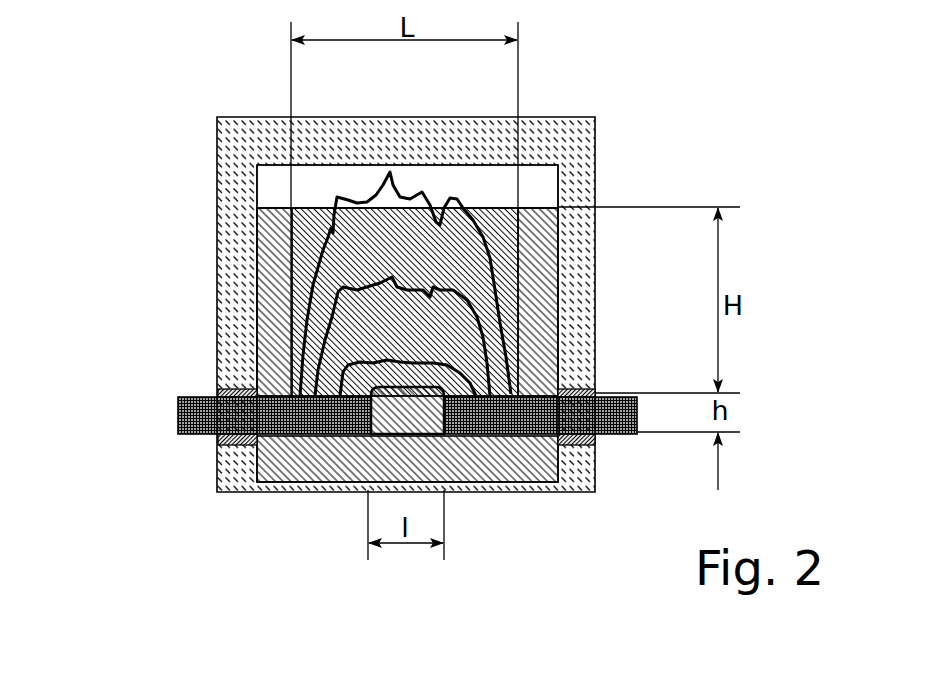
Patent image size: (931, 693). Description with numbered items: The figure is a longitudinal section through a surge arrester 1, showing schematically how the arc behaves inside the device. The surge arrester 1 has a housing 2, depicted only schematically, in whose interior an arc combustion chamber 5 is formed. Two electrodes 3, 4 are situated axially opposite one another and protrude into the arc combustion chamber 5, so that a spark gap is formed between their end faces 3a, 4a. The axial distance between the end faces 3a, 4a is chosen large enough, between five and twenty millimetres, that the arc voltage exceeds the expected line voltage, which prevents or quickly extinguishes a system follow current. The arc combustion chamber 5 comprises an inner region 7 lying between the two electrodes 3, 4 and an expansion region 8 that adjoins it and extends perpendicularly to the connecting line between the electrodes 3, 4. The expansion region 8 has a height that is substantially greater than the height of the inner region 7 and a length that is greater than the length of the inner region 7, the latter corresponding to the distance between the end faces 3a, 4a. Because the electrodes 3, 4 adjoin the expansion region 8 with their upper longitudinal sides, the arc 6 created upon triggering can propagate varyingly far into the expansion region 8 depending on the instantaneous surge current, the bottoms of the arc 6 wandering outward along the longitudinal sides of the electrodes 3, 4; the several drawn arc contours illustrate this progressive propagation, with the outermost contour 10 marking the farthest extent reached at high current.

The surge arrester 1 is at (213, 512).
The housing 2 is at (580, 322).
The electrode 3 is at (631, 435).
The end face 3a is at (468, 437).
The electrode 4 is at (180, 417).
The end face 4a is at (368, 437).
The arc combustion chamber 5 is at (279, 189).
The arc 6 is at (365, 344).
The inner region 7 is at (415, 440).
The expansion region 8 is at (253, 250).
The outer boundary of sealing material 10 is at (486, 240).